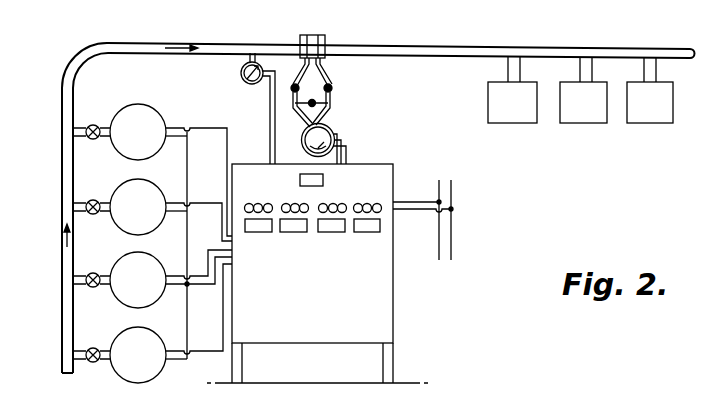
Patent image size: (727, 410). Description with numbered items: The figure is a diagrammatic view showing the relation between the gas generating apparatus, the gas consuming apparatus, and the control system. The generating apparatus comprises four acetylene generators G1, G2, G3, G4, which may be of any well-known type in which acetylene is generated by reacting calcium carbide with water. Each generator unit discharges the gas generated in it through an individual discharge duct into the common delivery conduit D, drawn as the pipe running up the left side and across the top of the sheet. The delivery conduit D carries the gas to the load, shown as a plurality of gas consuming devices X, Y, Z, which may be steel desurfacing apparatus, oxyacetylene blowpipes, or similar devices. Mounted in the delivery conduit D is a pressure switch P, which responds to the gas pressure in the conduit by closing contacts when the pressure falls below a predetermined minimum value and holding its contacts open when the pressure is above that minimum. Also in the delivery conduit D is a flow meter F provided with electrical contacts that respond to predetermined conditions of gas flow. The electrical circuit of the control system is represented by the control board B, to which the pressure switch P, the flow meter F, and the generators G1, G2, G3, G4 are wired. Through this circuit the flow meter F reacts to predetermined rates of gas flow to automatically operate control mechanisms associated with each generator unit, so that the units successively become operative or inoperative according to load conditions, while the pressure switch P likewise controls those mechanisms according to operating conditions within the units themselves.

The delivery conduit D is at (73, 173).
The pressure switch P is at (241, 74).
The flow meter F is at (334, 130).
The control board B is at (372, 289).
The acetylene generator G1 is at (152, 323).
The acetylene generator G2 is at (152, 279).
The acetylene generator G3 is at (152, 210).
The acetylene generator G4 is at (152, 170).
The gas consuming device X is at (512, 90).
The gas consuming device Y is at (583, 90).
The gas consuming device Z is at (650, 90).